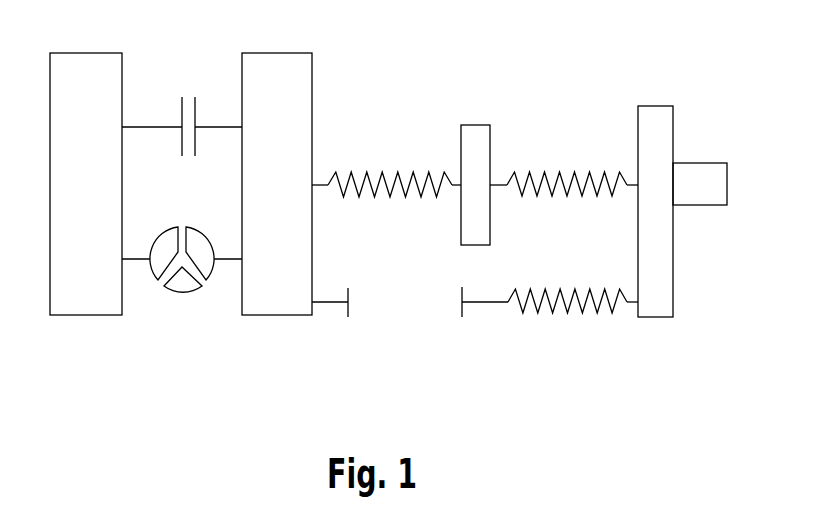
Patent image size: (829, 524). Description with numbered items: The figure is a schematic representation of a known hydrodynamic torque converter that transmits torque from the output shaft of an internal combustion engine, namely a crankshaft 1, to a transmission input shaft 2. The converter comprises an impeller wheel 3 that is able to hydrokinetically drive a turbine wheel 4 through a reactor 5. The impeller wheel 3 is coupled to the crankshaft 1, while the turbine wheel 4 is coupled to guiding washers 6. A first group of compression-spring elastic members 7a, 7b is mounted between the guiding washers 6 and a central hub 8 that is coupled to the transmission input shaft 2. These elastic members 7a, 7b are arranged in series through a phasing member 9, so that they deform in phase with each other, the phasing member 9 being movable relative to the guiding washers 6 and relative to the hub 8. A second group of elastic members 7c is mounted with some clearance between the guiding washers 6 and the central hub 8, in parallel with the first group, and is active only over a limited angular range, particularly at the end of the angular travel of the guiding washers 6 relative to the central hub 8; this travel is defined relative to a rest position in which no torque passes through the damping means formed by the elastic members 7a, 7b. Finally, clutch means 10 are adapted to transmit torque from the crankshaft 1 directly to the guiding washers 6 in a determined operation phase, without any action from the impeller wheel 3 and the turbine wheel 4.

The crankshaft 1 is at (88, 288).
The transmission input shaft 2 is at (694, 178).
The impeller wheel 3 is at (157, 266).
The turbine wheel 4 is at (210, 268).
The reactor 5 is at (184, 282).
The guiding washers 6 is at (287, 88).
The elastic member 7a is at (390, 171).
The elastic member 7b is at (548, 178).
The elastic member 7c is at (571, 312).
The central hub 8 is at (650, 118).
The phasing member 9 is at (472, 137).
The clutch means 10 is at (188, 95).